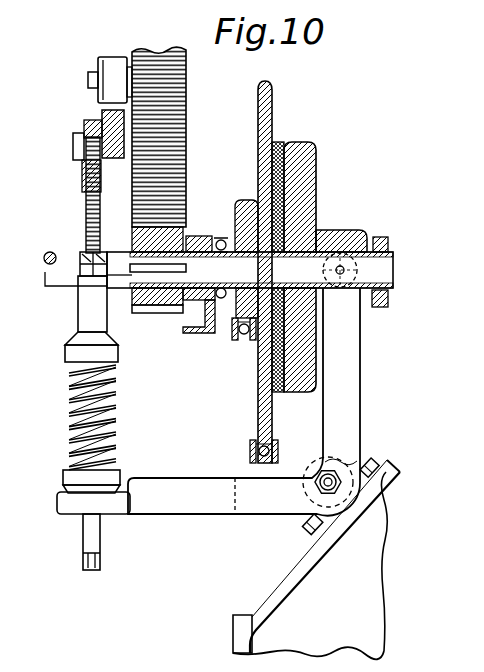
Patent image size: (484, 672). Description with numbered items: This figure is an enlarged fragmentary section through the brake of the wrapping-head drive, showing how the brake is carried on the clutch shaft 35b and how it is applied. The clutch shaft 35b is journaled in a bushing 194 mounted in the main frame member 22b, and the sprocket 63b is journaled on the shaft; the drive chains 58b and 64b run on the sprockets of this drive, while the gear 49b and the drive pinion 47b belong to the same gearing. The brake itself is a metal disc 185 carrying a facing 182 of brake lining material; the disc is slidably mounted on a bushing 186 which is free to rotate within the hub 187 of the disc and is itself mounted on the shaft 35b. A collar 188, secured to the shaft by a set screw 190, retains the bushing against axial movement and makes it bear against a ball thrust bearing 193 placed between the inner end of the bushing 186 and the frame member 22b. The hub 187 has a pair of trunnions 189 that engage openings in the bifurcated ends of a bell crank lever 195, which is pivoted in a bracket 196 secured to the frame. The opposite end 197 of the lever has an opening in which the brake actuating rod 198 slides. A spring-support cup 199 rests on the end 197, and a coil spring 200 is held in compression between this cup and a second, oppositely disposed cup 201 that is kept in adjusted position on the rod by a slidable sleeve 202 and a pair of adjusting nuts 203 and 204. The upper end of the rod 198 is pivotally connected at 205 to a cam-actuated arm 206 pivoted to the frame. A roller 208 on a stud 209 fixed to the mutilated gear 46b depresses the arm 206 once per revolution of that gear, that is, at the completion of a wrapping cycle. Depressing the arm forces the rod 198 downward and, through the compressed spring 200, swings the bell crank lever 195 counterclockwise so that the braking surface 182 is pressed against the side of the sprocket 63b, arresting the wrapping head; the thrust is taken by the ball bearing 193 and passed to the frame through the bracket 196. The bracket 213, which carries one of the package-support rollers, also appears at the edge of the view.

The mutilated gear 46b is at (186, 109).
The drive pinion 47b is at (136, 311).
The roller 208 is at (112, 56).
The stud 209 is at (88, 78).
The cam-actuated arm 206 is at (102, 112).
The pivotal connection 205 is at (73, 150).
The adjusting nut 203 is at (86, 252).
The clutch shaft 35b is at (46, 255).
The adjusting nut 204 is at (80, 272).
The slidable sleeve 202 is at (78, 312).
The cup 201 is at (70, 352).
The coil spring 200 is at (70, 431).
The spring-support cup 199 is at (63, 477).
The end of bell crank lever 197 is at (70, 505).
The brake actuating rod 198 is at (83, 540).
The gear 49b is at (11, 191).
The sprocket 63b is at (274, 110).
The facing 182 is at (280, 142).
The metal disc 185 is at (316, 175).
The bushing 186 is at (357, 227).
The hub 187 is at (358, 232).
The set screw 190 is at (383, 237).
The collar 188 is at (380, 307).
The trunnions 189 is at (333, 270).
The bushing 194 is at (196, 236).
The main frame member 22b is at (190, 334).
The ball thrust bearing 193 is at (221, 239).
The drive chain 58b is at (251, 340).
The drive chain 64b is at (250, 450).
The bell crank lever 195 is at (345, 393).
The bracket 213 is at (300, 582).
The bracket 196 is at (376, 461).